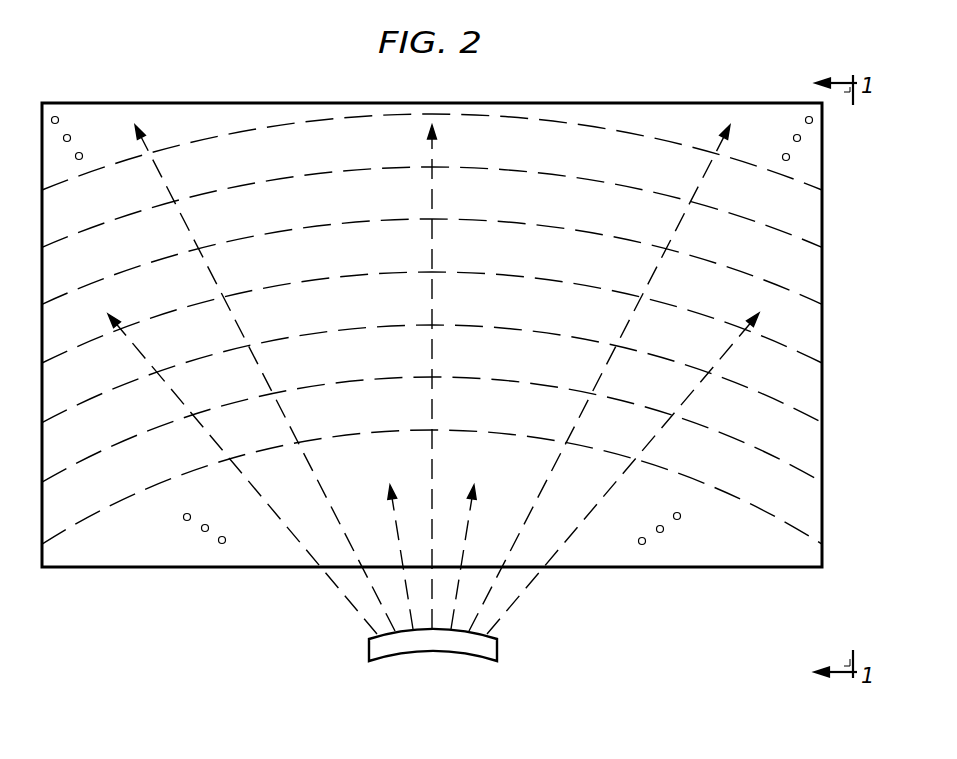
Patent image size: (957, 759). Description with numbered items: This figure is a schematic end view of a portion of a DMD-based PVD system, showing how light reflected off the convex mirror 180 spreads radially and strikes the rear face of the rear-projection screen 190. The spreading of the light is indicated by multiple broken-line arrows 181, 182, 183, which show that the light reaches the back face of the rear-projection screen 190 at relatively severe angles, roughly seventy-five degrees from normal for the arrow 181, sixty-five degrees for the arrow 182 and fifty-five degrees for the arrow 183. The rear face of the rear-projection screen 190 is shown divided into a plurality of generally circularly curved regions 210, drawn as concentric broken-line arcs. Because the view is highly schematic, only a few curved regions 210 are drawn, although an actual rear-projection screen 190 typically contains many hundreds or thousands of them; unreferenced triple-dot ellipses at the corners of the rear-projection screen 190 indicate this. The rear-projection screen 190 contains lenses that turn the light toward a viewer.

The convex mirror 180 is at (442, 655).
The broken-line arrow 181 is at (160, 173).
The broken-line arrow 182 is at (147, 363).
The broken-line arrow 183 is at (399, 525).
The rear-projection screen 190 is at (695, 568).
The curved regions 210 is at (593, 178).